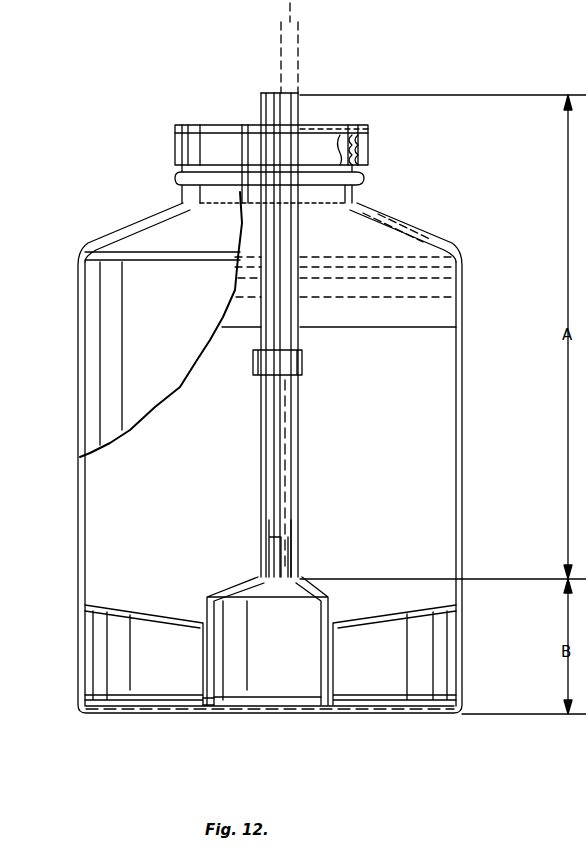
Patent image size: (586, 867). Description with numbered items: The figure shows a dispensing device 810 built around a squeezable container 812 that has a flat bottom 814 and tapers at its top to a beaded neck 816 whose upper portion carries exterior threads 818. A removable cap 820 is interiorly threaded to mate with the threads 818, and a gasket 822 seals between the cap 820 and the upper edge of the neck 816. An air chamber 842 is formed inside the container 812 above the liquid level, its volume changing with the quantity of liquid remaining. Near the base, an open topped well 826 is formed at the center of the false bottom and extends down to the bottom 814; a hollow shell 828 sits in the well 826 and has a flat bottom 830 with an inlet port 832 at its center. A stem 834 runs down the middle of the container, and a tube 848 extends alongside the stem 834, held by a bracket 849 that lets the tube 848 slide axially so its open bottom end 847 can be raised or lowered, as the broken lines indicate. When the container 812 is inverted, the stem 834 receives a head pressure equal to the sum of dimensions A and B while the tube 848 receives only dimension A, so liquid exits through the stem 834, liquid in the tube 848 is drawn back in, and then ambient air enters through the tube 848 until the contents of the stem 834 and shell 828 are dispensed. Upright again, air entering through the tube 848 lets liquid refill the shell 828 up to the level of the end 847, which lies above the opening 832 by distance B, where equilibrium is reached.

The dispensing device 810 is at (175, 78).
The container 812 is at (462, 358).
The bottom 814 is at (390, 713).
The neck 816 is at (363, 184).
The threads 818 is at (362, 156).
The cap 820 is at (175, 143).
The gasket 822 is at (323, 150).
The well 826 is at (333, 648).
The shell 828 is at (203, 646).
The flat bottom 830 is at (225, 713).
The inlet port 832 is at (262, 713).
The stem 834 is at (262, 425).
The air chamber 842 is at (318, 205).
The open bottom end 847 is at (300, 521).
The tube 848 is at (300, 433).
The bracket 849 is at (302, 357).